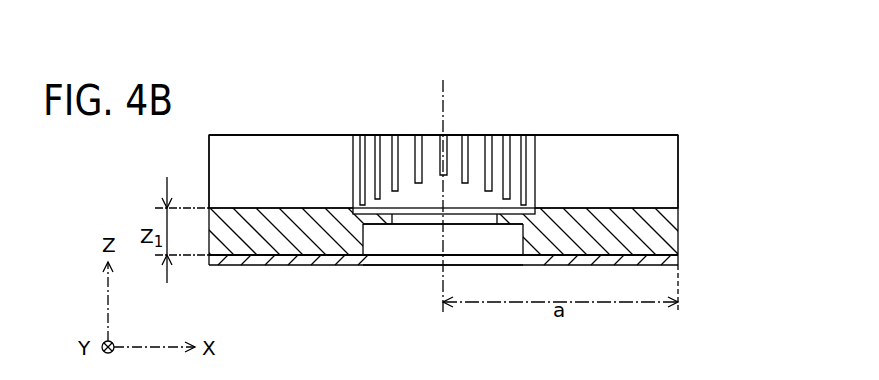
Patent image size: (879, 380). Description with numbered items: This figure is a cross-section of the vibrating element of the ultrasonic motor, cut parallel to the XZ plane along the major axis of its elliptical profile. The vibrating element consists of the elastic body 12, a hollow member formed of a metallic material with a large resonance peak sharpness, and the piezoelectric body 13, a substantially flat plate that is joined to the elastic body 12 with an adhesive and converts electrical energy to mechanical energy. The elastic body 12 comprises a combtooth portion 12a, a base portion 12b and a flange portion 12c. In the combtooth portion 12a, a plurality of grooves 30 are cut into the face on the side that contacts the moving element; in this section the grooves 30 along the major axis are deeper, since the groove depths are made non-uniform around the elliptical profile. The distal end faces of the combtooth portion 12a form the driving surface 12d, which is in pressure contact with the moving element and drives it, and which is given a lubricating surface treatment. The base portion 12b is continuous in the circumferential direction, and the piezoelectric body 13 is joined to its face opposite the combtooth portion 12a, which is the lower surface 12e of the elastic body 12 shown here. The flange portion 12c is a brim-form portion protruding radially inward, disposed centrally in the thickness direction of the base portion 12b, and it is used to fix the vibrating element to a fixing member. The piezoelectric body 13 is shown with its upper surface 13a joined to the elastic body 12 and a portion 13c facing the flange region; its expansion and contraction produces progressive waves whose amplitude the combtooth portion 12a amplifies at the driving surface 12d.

The elastic body 12 is at (758, 170).
The combtooth portion 12a is at (672, 175).
The base portion 12b is at (672, 218).
The flange portion 12c is at (504, 218).
The driving surface 12d is at (315, 135).
The lower surface of plate 12e is at (256, 258).
The piezoelectric body 13 is at (672, 260).
The upper surface of base plate 13a is at (313, 248).
The recess facing portion of base plate 13c is at (420, 262).
The grooves 30 is at (513, 160).